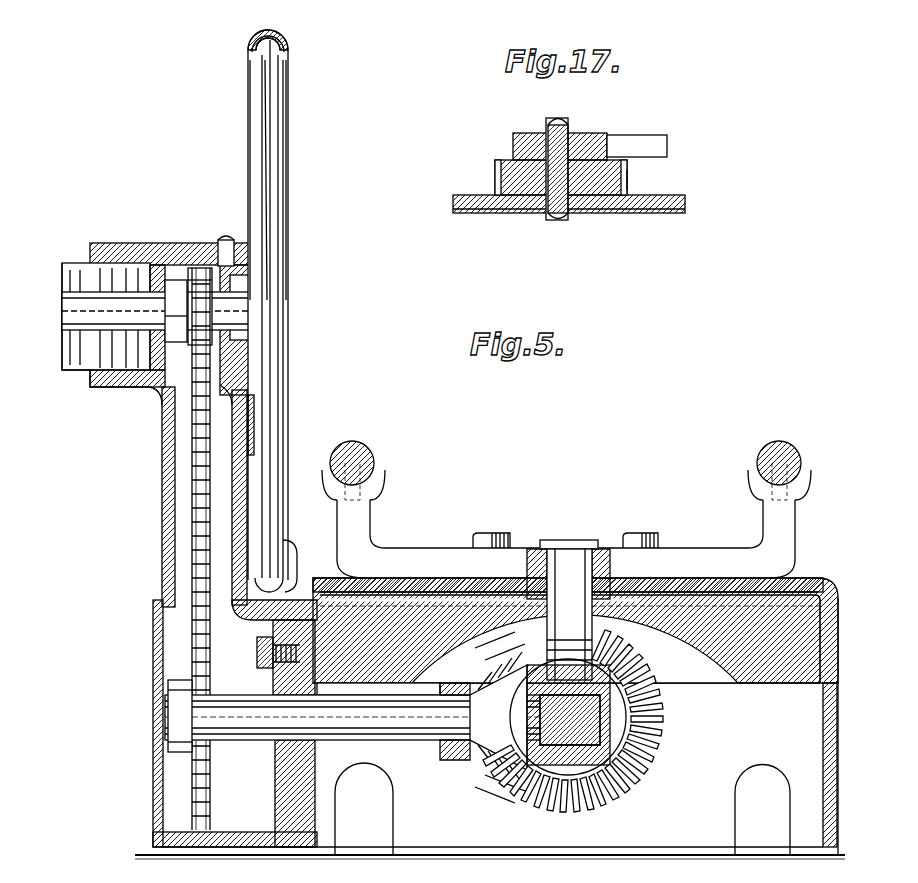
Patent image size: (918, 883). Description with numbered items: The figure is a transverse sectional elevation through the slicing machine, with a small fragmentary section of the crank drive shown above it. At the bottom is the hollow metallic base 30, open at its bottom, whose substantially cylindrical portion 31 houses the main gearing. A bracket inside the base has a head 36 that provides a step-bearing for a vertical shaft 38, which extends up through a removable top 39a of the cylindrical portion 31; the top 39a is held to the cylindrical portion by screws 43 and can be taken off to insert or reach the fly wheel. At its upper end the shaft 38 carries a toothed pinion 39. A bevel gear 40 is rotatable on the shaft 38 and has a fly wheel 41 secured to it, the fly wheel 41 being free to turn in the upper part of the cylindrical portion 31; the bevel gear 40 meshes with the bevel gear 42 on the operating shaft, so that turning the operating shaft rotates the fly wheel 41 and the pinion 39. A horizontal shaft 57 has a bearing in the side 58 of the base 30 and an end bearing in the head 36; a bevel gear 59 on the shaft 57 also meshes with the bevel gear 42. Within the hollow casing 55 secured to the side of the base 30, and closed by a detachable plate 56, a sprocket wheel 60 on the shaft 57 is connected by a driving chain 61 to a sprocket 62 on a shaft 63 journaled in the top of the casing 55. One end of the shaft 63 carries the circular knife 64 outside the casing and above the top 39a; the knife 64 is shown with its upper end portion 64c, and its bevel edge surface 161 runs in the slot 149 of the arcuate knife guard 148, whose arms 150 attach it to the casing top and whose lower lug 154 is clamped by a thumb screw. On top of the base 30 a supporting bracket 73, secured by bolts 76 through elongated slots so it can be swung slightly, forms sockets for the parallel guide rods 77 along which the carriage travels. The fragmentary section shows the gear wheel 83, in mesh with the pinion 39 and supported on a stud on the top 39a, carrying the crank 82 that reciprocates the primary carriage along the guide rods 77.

In FIG. 17, the hollow metallic base 30 is at (672, 212).
In FIG. 5, the hollow metallic base 30 is at (490, 836).
In FIG. 5, the cylindrical portion 31 is at (493, 809).
In FIG. 5, the head 36 is at (512, 780).
In FIG. 5, the shaft 38 is at (556, 592).
In FIG. 5, the toothed pinion 39 is at (598, 545).
In FIG. 17, the removable top 39a is at (637, 215).
In FIG. 5, the removable top 39a is at (437, 590).
In FIG. 5, the bevel gear 40 is at (620, 628).
In FIG. 5, the fly wheel 41 is at (762, 683).
In FIG. 5, the bevel gear 42 is at (665, 712).
In FIG. 5, the screws 43 is at (790, 582).
In FIG. 5, the hollow casing 55 is at (165, 497).
In FIG. 5, the detachable plate 56 is at (153, 678).
In FIG. 5, the shaft 57 is at (395, 745).
In FIG. 5, the side 58 is at (320, 750).
In FIG. 5, the bevel gear 59 is at (470, 757).
In FIG. 5, the sprocket wheel 60 is at (198, 773).
In FIG. 5, the driving chain 61 is at (230, 637).
In FIG. 5, the sprocket 62 is at (198, 295).
In FIG. 5, the shaft 63 is at (165, 285).
In FIG. 5, the circular knife 64 is at (268, 258).
In FIG. 5, the arm end loop 64c is at (284, 48).
In FIG. 5, the supporting bracket 73 is at (400, 562).
In FIG. 5, the bolts 76 is at (490, 521).
In FIG. 5, the guide rods 77 is at (374, 470).
In FIG. 17, the crank 82 is at (632, 138).
In FIG. 17, the gear wheel 83 is at (625, 178).
In FIG. 5, the arcuate knife guard 148 is at (252, 85).
In FIG. 5, the slot 149 is at (286, 87).
In FIG. 5, the arms 150 is at (254, 405).
In FIG. 5, the lug 154 is at (296, 550).
In FIG. 5, the bevel edge surface 161 is at (262, 75).